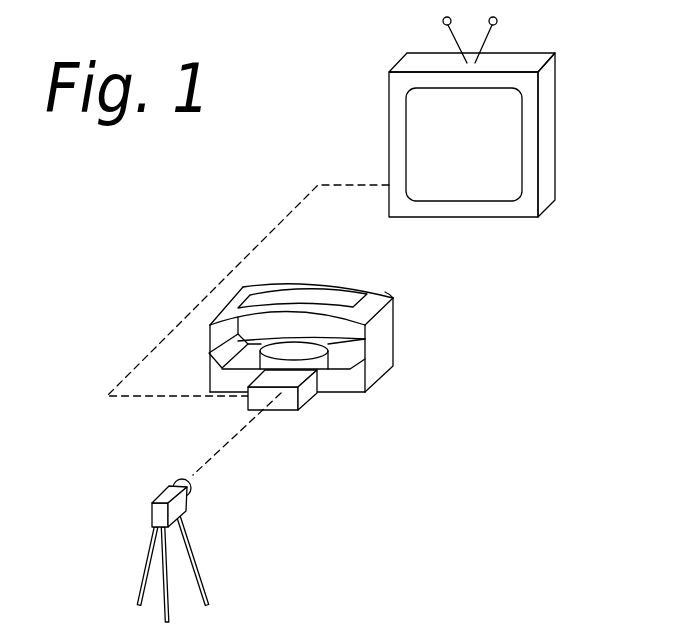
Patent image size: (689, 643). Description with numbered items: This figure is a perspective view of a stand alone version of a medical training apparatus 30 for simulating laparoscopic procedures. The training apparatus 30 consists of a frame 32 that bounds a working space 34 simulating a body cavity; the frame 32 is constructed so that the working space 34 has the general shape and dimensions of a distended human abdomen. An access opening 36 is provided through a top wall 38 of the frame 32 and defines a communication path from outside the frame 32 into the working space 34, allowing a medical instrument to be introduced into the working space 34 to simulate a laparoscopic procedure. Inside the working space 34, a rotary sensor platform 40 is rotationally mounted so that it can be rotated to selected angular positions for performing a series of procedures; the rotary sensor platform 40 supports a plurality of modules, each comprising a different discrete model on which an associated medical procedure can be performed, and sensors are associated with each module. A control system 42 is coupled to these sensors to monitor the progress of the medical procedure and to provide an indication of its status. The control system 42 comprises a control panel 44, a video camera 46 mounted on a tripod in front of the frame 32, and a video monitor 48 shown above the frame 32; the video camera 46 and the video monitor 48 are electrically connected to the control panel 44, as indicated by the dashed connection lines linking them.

The medical training apparatus 30 is at (570, 230).
The frame 32 is at (395, 330).
The working space 34 is at (300, 338).
The access opening 36 is at (347, 303).
The top wall 38 is at (393, 295).
The rotary sensor platform 40 is at (320, 360).
The control system 42 is at (128, 457).
The control panel 44 is at (308, 397).
The video camera 46 is at (135, 543).
The video monitor 48 is at (575, 153).